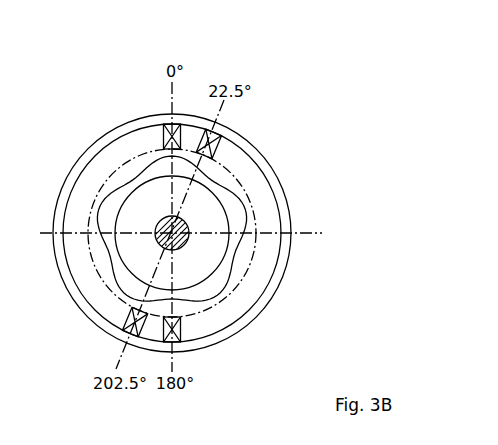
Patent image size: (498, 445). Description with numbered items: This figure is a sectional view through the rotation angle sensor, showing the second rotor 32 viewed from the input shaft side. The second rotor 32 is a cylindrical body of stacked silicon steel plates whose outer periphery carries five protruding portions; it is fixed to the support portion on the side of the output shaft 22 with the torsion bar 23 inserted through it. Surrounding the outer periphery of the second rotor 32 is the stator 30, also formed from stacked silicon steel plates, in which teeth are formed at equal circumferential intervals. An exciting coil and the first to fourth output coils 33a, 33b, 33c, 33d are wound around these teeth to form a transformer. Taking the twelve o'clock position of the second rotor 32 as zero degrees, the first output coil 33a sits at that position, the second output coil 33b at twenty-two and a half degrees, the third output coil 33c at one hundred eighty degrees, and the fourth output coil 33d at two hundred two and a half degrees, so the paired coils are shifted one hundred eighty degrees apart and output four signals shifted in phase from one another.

The stator 30 is at (281, 176).
The output shaft 22 is at (212, 253).
The second rotor 32 is at (214, 292).
The torsion bar 23 is at (199, 224).
The first output coil 33a is at (164, 127).
The second output coil 33b is at (220, 136).
The third output coil 33c is at (181, 336).
The fourth output coil 33d is at (128, 320).